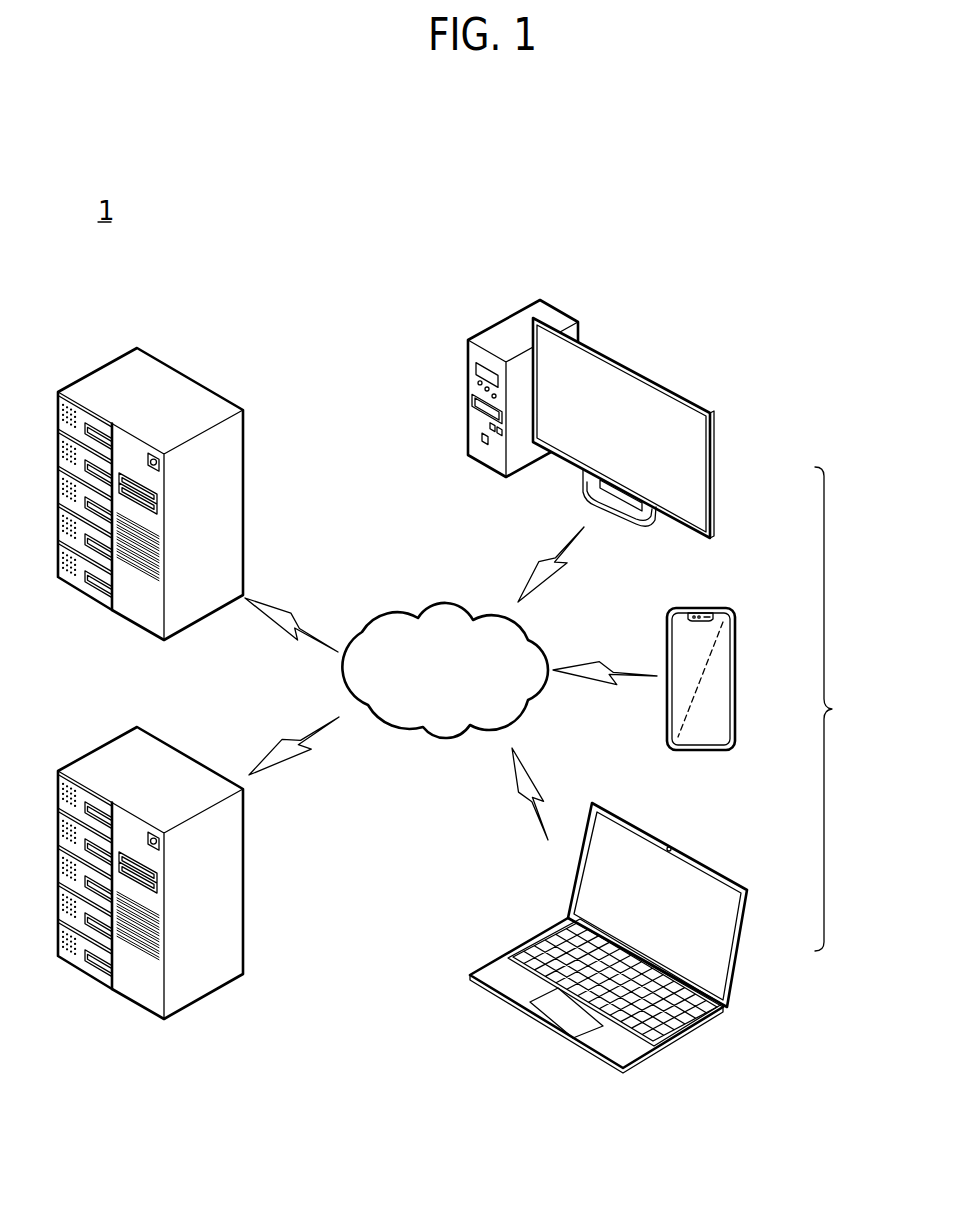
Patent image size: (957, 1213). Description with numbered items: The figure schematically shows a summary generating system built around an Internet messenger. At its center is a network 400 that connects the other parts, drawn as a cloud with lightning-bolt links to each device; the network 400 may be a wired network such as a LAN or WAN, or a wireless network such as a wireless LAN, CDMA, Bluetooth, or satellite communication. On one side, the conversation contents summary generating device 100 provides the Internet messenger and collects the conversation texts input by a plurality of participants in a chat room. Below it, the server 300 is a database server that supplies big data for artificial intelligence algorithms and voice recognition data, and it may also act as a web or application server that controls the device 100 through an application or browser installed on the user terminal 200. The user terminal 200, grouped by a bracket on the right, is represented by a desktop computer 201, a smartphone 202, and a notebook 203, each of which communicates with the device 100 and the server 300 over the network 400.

The conversation contents summary generating device 100 is at (198, 400).
The server 300 is at (198, 779).
The network 400 is at (392, 613).
The user terminal 200 is at (841, 709).
The desktop computer 201 is at (712, 483).
The smartphone 202 is at (737, 680).
The notebook 203 is at (742, 940).